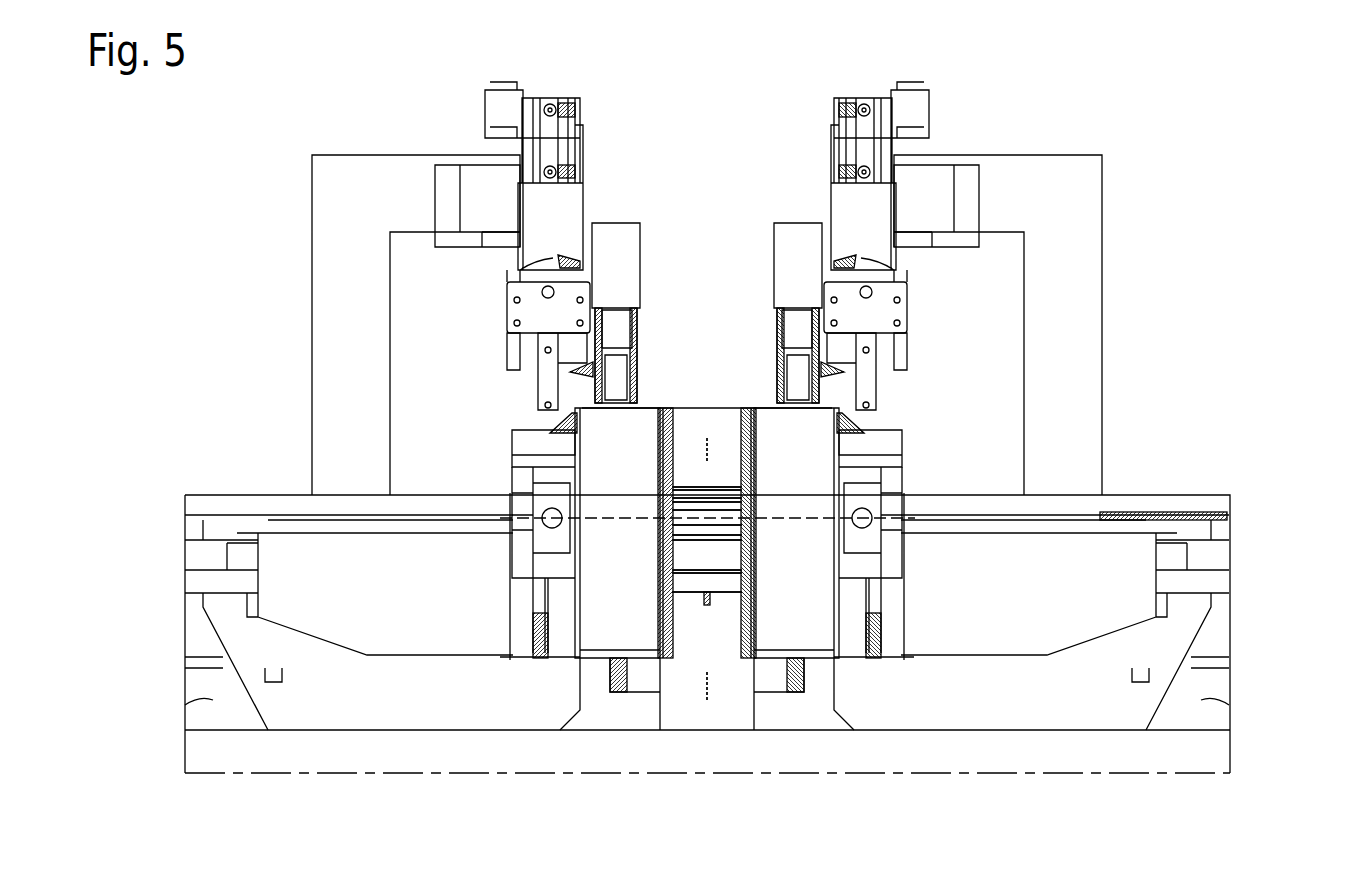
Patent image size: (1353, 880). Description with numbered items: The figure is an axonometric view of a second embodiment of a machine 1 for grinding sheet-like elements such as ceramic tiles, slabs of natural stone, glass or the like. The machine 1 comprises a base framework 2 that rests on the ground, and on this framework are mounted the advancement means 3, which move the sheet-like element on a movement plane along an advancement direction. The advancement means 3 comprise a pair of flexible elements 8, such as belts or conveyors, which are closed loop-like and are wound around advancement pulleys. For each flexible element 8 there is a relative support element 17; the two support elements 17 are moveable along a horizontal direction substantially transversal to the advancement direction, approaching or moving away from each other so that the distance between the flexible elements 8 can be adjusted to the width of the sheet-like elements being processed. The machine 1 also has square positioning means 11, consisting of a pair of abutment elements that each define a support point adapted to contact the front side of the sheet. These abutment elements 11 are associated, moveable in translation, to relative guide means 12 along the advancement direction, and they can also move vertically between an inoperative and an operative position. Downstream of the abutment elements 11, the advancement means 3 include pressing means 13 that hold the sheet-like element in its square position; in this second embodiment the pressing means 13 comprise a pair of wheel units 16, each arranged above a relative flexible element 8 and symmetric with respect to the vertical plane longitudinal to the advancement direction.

The machine 1 is at (1276, 97).
The base framework 2 is at (212, 700).
The advancement means 3 is at (550, 428).
The flexible element 8 is at (610, 603).
The square positioning means 11 is at (545, 387).
The guide means 12 is at (489, 198).
The pressing means 13 is at (560, 262).
The wheel unit 16 is at (593, 374).
The support element 17 is at (522, 552).